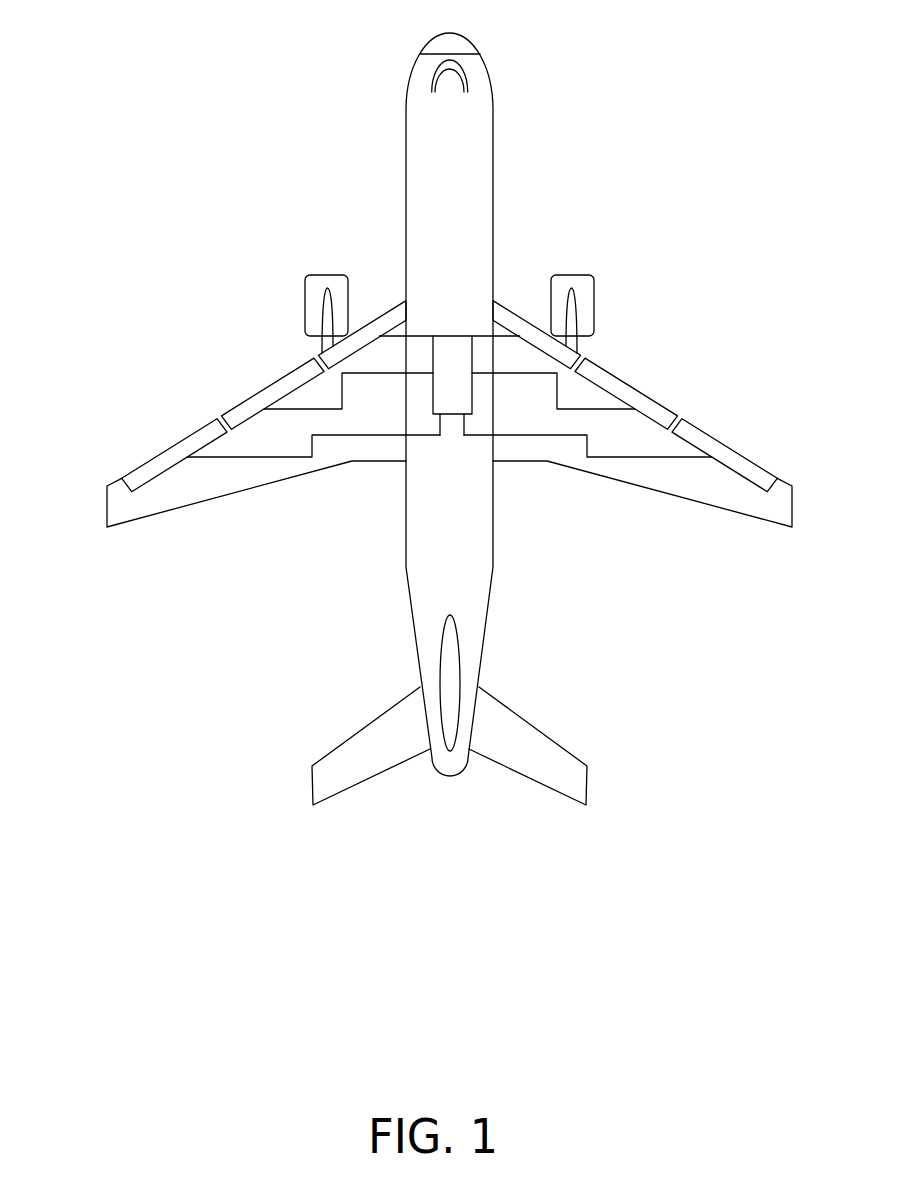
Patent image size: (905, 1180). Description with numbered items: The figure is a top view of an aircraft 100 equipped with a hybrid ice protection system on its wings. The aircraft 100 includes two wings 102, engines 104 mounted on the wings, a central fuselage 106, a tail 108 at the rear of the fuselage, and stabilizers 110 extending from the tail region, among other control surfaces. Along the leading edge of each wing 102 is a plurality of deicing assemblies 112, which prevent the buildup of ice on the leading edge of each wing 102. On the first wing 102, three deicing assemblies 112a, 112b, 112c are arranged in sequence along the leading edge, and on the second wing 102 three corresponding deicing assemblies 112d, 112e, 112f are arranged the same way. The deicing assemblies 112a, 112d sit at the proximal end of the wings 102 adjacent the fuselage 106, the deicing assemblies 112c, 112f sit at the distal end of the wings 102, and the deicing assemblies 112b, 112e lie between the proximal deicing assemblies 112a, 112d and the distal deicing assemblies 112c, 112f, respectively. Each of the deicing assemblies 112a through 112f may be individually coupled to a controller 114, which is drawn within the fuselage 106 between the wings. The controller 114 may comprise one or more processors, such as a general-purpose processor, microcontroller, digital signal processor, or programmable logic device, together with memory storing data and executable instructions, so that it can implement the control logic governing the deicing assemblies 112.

The aircraft 100 is at (275, 100).
The wings 102 is at (108, 497).
The engines 104 is at (310, 282).
The fuselage 106 is at (407, 222).
The tail 108 is at (442, 677).
The stabilizers 110 is at (352, 748).
The deicing assemblies 112 is at (183, 415).
The deicing assembly 112a is at (388, 310).
The deicing assembly 112b is at (287, 374).
The deicing assembly 112c is at (143, 466).
The deicing assembly 112d is at (512, 307).
The deicing assembly 112e is at (613, 372).
The deicing assembly 112f is at (758, 460).
The controller 114 is at (472, 396).